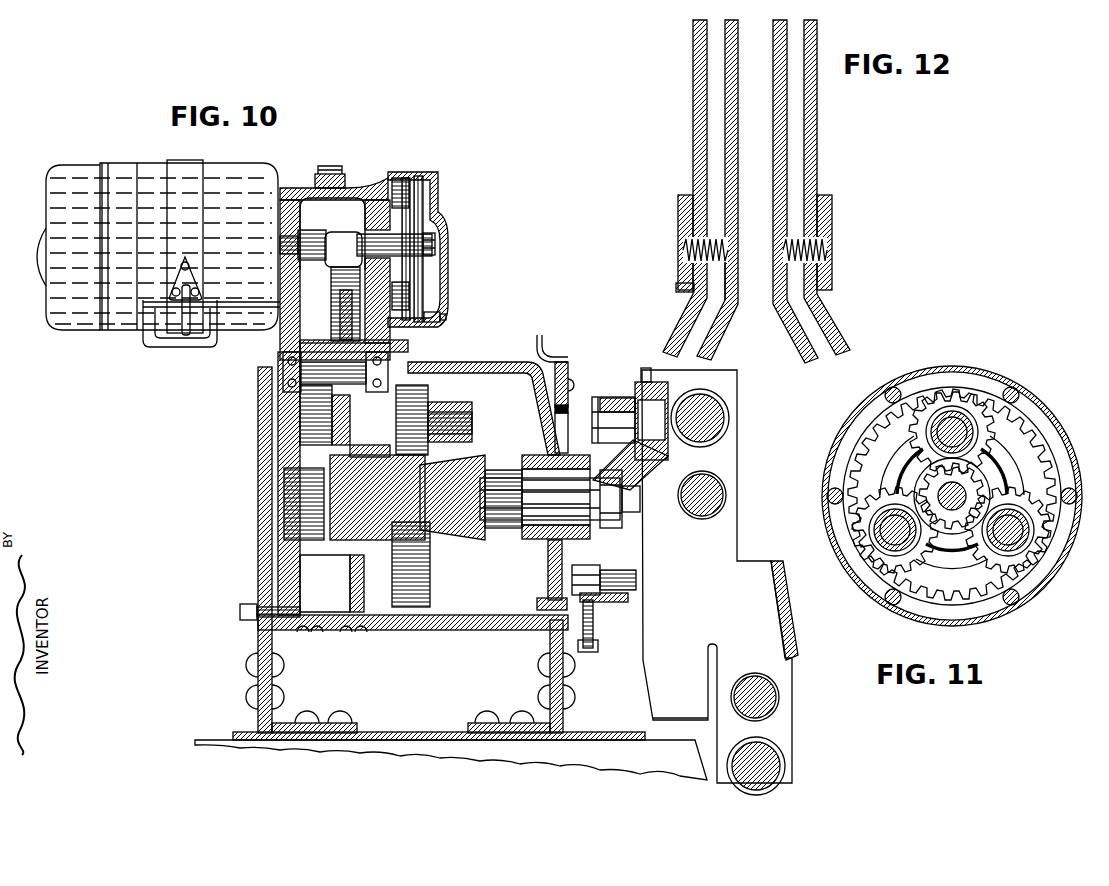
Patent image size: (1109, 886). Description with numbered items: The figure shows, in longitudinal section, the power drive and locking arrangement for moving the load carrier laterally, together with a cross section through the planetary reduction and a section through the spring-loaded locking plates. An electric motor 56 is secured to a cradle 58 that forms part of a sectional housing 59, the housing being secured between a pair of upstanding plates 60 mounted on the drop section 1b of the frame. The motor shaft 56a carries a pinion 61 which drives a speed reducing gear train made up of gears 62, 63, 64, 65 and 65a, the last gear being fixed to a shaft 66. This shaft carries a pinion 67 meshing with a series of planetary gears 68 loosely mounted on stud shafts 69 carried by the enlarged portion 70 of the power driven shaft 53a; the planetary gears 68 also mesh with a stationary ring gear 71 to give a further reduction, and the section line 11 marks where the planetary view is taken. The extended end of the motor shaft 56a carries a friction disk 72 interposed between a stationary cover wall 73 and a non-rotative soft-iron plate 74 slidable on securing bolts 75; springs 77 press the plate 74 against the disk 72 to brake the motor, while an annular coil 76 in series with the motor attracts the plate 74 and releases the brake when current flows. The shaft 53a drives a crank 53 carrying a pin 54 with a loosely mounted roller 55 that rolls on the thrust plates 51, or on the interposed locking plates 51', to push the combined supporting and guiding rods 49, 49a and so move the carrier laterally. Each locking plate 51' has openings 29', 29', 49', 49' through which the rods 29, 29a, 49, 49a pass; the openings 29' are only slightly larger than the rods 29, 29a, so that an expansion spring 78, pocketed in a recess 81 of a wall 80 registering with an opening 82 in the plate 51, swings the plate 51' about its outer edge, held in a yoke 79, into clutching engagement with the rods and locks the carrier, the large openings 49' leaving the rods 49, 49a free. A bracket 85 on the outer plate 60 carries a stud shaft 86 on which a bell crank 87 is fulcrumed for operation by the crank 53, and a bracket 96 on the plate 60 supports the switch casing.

In FIG. 10, the electric motor 56 is at (145, 176).
In FIG. 10, the cradle 58 is at (235, 340).
In FIG. 10, the gear 63 is at (293, 281).
In FIG. 10, the sectional housing 59 is at (350, 186).
In FIG. 10, the motor shaft 56a is at (328, 240).
In FIG. 10, the pinion 61 is at (340, 242).
In FIG. 10, the gear 62 is at (342, 275).
In FIG. 10, the stationary wall 73 is at (437, 202).
In FIG. 10, the non-rotative annular plate 74 is at (420, 192).
In FIG. 10, the springs 77 is at (410, 182).
In FIG. 10, the annular coil 76 is at (394, 178).
In FIG. 10, the friction disk 72 is at (436, 274).
In FIG. 10, the securing bolts 75 is at (436, 318).
In FIG. 10, the stationary ring gear 71 is at (426, 370).
In FIG. 11, the stationary ring gear 71 is at (982, 598).
In FIG. 10, the section line 11— 11 is at (421, 368).
In FIG. 10, the gear 65 is at (330, 392).
In FIG. 10, the gear 64 is at (307, 428).
In FIG. 10, the shaft 66 is at (290, 497).
In FIG. 11, the shaft 66 is at (965, 493).
In FIG. 10, the gear 65a is at (338, 612).
In FIG. 10, the planetary gears 68 is at (433, 396).
In FIG. 11, the planetary gears 68 is at (880, 497).
In FIG. 10, the enlarged portion of shaft 53a 70 is at (462, 417).
In FIG. 10, the stud shafts 69 is at (462, 432).
In FIG. 11, the stud shafts 69 is at (1030, 538).
In FIG. 10, the pinion 67 is at (420, 522).
In FIG. 11, the pinion 67 is at (947, 525).
In FIG. 10, the power driven shaft 53a is at (548, 490).
In FIG. 10, the crank 53 is at (628, 463).
In FIG. 10, the bracket 96 is at (548, 352).
In FIG. 10, the roller 55 is at (647, 395).
In FIG. 10, the pin 54 is at (648, 400).
In FIG. 10, the stud shaft 86 is at (632, 575).
In FIG. 10, the bell crank 87 is at (615, 597).
In FIG. 10, the bracket 85 is at (581, 648).
In FIG. 10, the upstanding plates 60 is at (257, 638).
In FIG. 10, the drop section of frame 1b is at (603, 752).
In FIG. 10, the locking plate 51' is at (717, 576).
In FIG. 12, the locking plate 51' is at (757, 191).
In FIG. 10, the yoke 79 is at (785, 602).
In FIG. 10, the opening 49' is at (750, 576).
In FIG. 10, the connecting rod 49 is at (726, 417).
In FIG. 10, the opening 29' is at (755, 596).
In FIG. 10, the rod 29 is at (726, 481).
In FIG. 10, the rod 29a is at (772, 688).
In FIG. 10, the connecting rod 49a is at (777, 762).
In FIG. 12, the thrust plate 51 is at (753, 188).
In FIG. 12, the wall 80 is at (678, 207).
In FIG. 12, the recess 81 is at (680, 279).
In FIG. 12, the expansion spring 78 is at (718, 241).
In FIG. 12, the opening 82 is at (720, 271).